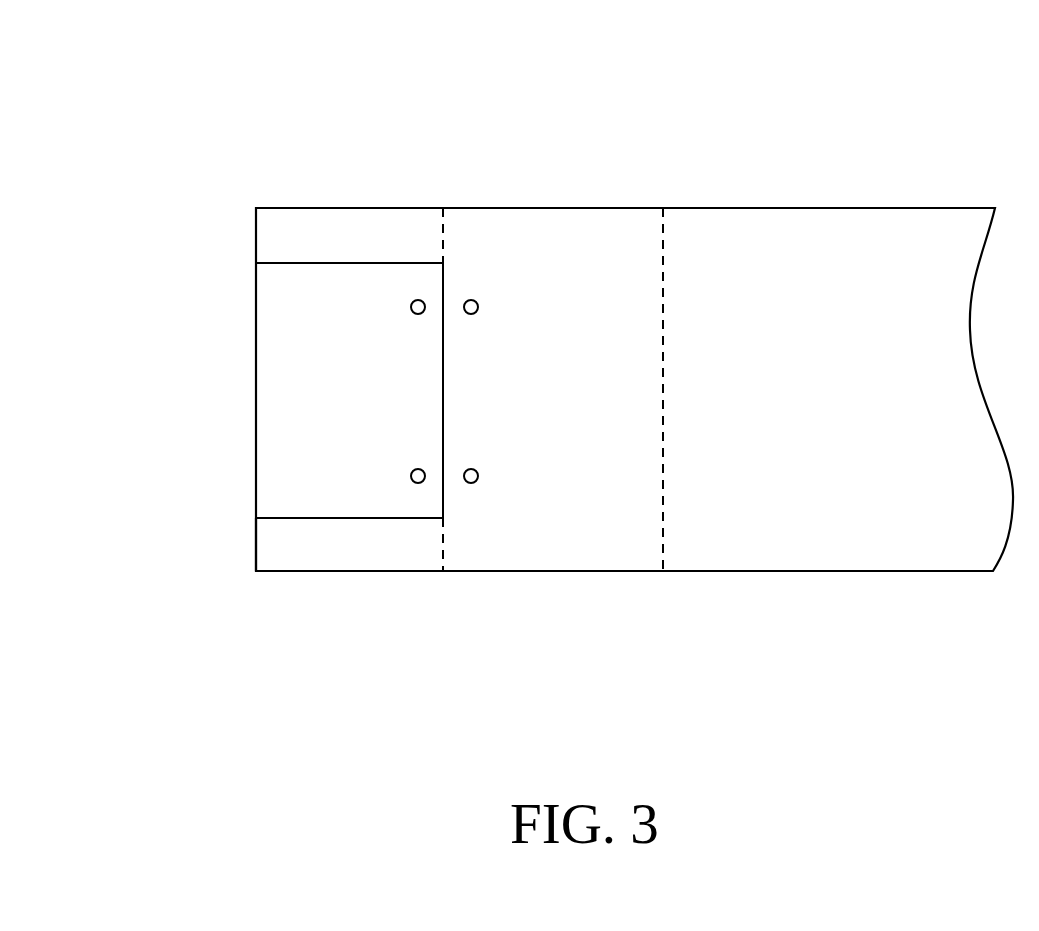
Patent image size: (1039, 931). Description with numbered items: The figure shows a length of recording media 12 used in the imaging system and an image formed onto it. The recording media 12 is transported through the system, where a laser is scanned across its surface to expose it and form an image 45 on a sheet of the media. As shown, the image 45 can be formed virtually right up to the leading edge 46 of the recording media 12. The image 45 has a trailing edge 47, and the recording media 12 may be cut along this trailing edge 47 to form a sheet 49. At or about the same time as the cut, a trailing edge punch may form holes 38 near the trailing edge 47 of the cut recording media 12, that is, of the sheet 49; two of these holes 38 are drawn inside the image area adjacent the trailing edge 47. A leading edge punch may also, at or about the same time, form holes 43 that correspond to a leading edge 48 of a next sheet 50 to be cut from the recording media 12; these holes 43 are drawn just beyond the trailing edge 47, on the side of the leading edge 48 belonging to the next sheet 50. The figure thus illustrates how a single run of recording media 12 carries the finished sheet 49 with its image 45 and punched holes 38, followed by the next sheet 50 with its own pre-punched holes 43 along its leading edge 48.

The recording media 12 is at (668, 112).
The holes 38 is at (411, 312).
The holes 43 is at (478, 311).
The image 45 is at (268, 303).
The leading edge 46 is at (255, 556).
The trailing edge 47 is at (445, 322).
The leading edge 48 is at (447, 253).
The sheet 49 is at (345, 556).
The next sheet 50 is at (597, 235).